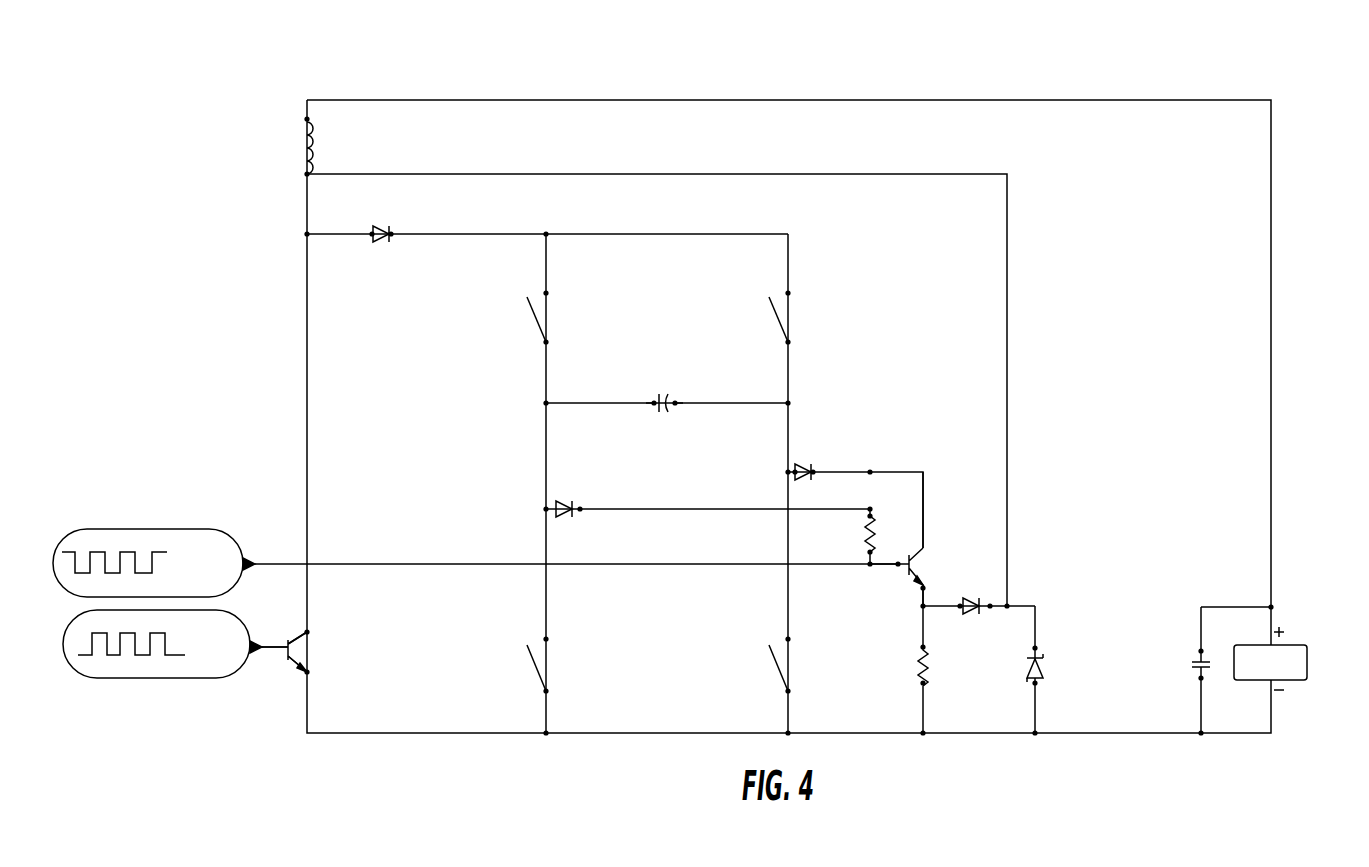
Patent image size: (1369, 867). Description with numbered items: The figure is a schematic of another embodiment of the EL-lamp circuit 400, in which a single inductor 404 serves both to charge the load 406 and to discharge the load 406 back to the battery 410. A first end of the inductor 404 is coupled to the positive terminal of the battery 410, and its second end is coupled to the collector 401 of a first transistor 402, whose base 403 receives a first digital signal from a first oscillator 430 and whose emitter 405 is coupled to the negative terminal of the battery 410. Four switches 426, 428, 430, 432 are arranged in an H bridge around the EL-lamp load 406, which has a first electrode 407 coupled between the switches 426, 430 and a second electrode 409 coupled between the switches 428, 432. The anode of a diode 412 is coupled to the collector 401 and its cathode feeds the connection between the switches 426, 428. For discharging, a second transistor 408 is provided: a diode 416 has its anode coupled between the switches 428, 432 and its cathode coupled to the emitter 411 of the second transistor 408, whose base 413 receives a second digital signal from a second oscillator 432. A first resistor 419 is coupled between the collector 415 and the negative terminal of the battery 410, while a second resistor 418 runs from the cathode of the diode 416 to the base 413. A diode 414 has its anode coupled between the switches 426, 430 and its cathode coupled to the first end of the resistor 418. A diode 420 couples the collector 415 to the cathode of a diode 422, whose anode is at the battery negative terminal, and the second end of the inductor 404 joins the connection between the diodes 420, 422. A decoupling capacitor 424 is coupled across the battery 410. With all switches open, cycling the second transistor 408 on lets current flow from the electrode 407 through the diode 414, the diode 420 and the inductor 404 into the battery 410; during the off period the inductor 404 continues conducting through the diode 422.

The drive circuit 400 is at (1303, 127).
The collector 401 is at (308, 624).
The first transistor 402 is at (316, 638).
The base 403 is at (295, 665).
The inductor 404 is at (315, 156).
The emitter of transistor 405 is at (312, 669).
The load 406 is at (660, 422).
The first electrode 407 is at (653, 412).
The second transistor 408 is at (935, 553).
The second electrode 409 is at (674, 412).
The battery 410 is at (1303, 645).
The emitter 411 is at (911, 559).
The diode 412 is at (378, 244).
The base 413 is at (900, 580).
The diode 414 is at (572, 520).
The collector 415 is at (932, 586).
The diode 416 is at (807, 458).
The second resistor 418 is at (862, 526).
The first resistor 419 is at (897, 671).
The diode 420 is at (960, 620).
The diode 422 is at (1046, 668).
The capacitor 424 is at (1185, 661).
The switch S1 426 is at (527, 312).
The switch S2 428 is at (808, 287).
The switch S3 430 is at (528, 676).
The switch S4 432 is at (770, 672).